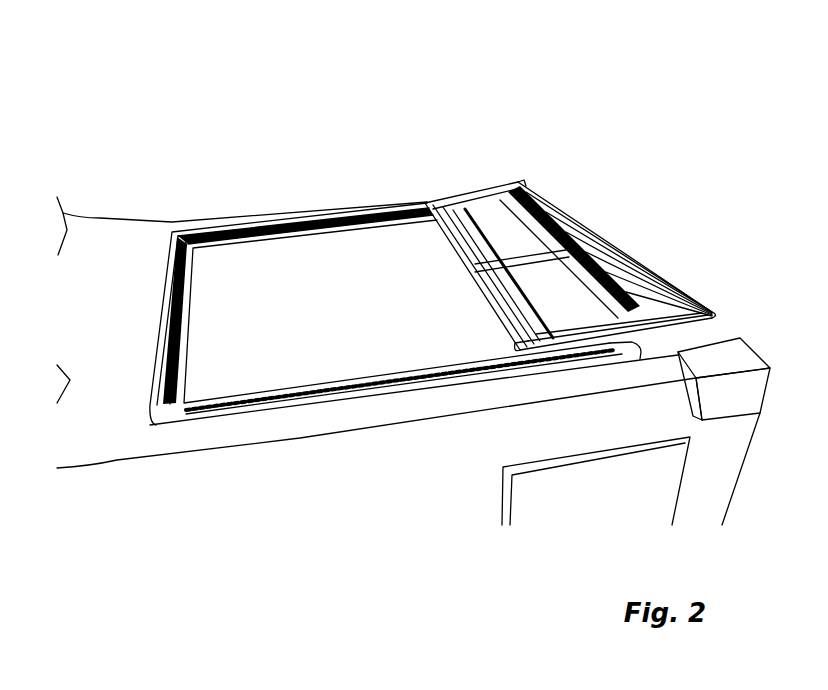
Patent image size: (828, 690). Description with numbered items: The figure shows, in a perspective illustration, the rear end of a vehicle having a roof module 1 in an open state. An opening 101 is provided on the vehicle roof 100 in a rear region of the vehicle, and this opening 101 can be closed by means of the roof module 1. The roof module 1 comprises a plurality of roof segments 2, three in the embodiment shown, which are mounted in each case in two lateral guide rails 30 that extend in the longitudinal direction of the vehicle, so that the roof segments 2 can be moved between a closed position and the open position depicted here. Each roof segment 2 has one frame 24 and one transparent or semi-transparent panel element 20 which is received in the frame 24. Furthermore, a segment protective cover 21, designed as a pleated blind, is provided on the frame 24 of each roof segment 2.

The roof module 1 is at (433, 251).
The roof segments 2 is at (565, 211).
The panel element 20 is at (490, 277).
The segment protective cover 21 is at (577, 257).
The frame 24 is at (458, 201).
The guide rails 30 is at (395, 337).
The vehicle roof 100 is at (115, 312).
The opening 101 is at (302, 354).